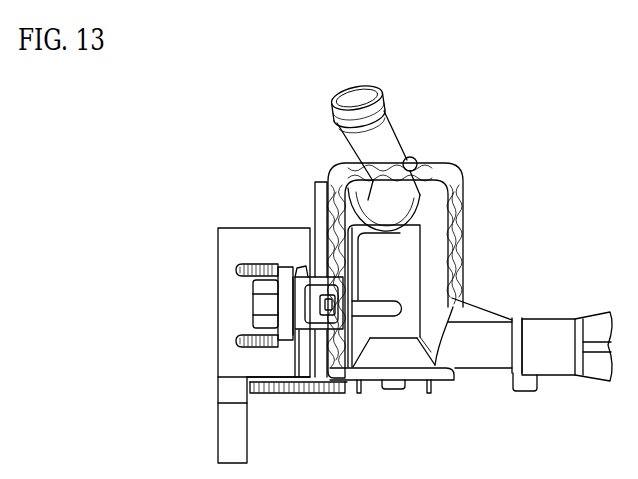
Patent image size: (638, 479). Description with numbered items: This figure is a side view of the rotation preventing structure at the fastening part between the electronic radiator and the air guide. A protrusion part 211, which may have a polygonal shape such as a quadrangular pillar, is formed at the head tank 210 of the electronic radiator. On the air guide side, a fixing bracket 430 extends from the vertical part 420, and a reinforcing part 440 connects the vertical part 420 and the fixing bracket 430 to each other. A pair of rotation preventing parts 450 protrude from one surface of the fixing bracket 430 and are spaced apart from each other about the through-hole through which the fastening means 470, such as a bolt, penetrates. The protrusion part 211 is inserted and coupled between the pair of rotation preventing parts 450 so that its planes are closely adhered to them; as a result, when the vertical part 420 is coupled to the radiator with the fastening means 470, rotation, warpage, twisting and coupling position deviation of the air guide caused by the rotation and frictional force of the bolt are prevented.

The head tank 210 is at (461, 239).
The protrusion part 211 is at (330, 382).
The vertical part 420 is at (232, 240).
The fixing bracket 430 is at (297, 276).
The reinforcing part 440 is at (237, 342).
The rotation preventing part 450 is at (300, 275).
The fastening means 470 is at (260, 348).